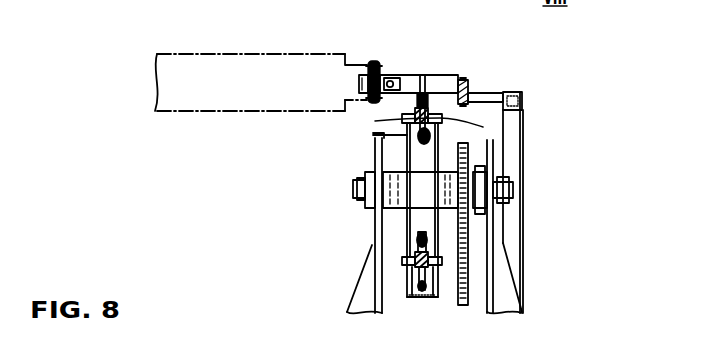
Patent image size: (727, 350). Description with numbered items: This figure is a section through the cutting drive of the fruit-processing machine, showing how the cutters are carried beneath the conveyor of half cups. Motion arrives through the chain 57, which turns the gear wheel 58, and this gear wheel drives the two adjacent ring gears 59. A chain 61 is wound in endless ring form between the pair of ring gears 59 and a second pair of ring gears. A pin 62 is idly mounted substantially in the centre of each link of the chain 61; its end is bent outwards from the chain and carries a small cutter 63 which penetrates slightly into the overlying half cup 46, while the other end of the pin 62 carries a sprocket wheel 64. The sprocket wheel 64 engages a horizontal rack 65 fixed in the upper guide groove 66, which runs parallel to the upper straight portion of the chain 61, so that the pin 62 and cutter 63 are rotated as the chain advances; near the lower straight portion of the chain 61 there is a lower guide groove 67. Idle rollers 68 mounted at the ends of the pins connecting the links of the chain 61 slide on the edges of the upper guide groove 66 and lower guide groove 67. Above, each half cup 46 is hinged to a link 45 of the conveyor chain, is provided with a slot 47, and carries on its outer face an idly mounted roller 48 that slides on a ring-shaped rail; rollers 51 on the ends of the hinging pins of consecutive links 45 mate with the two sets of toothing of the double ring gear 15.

The double ring gear 15 is at (187, 112).
The link 45 is at (365, 87).
The half cup 46 is at (462, 80).
The slot 47 is at (424, 104).
The roller 48 is at (469, 85).
The rollers 51 is at (383, 62).
The chain 57 is at (523, 297).
The gear wheel 58 is at (472, 190).
The ring gears 59 is at (393, 238).
The chain 61 is at (395, 135).
The pin 62 is at (418, 106).
The cutter 63 is at (426, 104).
The sprocket wheel 64 is at (385, 172).
The horizontal rack 65 is at (483, 127).
The upper guide groove 66 is at (480, 115).
The lower guide groove 67 is at (422, 298).
The idle rollers 68 is at (375, 121).